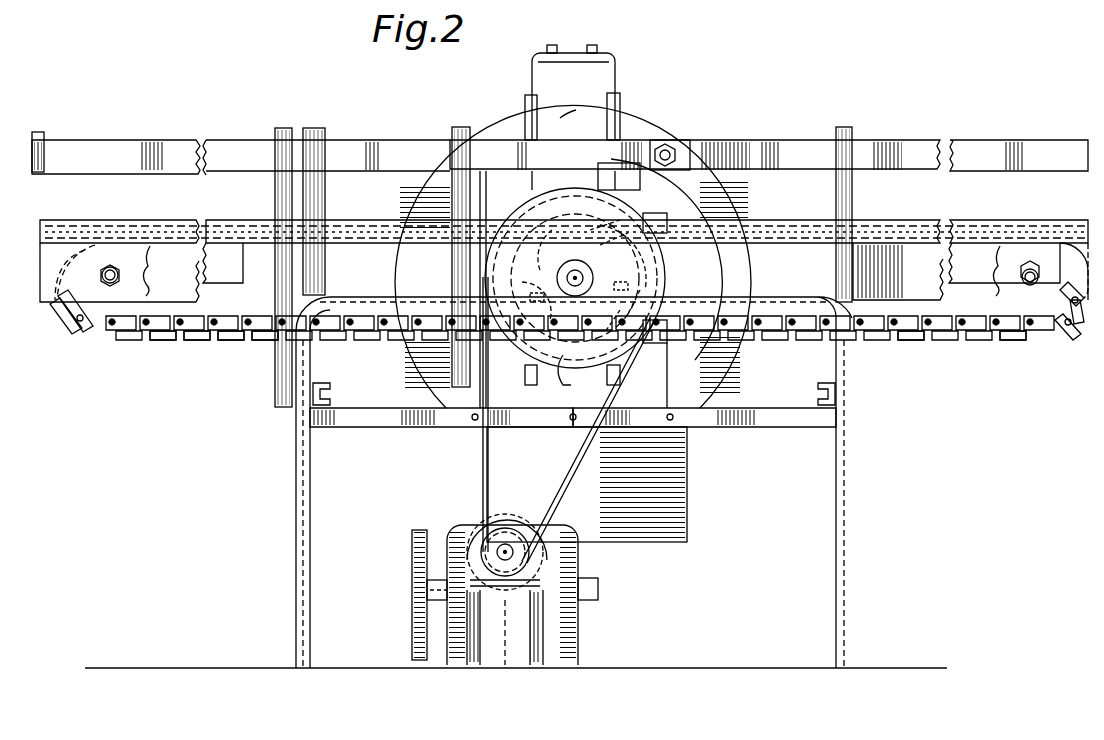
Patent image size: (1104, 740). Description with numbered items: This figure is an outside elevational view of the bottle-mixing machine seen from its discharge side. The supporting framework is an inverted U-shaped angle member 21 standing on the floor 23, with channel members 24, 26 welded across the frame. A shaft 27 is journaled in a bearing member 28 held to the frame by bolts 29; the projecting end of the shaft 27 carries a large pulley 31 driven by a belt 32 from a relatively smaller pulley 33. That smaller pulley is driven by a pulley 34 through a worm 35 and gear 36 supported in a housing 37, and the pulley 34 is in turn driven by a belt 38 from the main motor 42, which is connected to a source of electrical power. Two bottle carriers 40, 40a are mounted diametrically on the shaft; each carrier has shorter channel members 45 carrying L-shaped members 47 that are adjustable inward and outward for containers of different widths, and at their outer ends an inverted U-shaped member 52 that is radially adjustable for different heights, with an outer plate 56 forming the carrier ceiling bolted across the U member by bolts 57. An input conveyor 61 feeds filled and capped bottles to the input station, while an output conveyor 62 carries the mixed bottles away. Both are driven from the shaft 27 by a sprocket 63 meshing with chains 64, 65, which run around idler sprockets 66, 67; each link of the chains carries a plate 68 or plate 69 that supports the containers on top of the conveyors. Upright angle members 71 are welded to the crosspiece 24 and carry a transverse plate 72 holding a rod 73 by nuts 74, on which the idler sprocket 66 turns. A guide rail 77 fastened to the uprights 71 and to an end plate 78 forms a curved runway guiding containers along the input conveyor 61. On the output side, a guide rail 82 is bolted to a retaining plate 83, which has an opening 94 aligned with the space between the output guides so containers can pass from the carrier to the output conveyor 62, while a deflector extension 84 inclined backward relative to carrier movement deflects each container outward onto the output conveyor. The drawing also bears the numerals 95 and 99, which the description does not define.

The inverted U-shaped angle member 21 is at (772, 298).
The floor 23 is at (741, 659).
The channel member 24 is at (824, 389).
The channel member 26 is at (324, 389).
The shaft 27 is at (580, 262).
The bearing member 28 is at (523, 284).
The bolt 29 is at (527, 283).
The large pulley 31 is at (574, 375).
The belt 32 is at (575, 480).
The smaller pulley 33 is at (516, 532).
The pulley 34 is at (410, 546).
The worm 35 is at (505, 622).
The gear 36 is at (505, 514).
The housing 37 is at (476, 524).
The belt 38 is at (418, 530).
The bottle carrier 40 is at (619, 94).
The bottle carrier 40a is at (525, 386).
The main motor 42 is at (580, 628).
The shorter channel member 45 is at (668, 294).
The L-shaped member 47 is at (525, 97).
The inverted U-shaped member 52 is at (614, 70).
The outer plate 56 is at (550, 64).
The bolt 57 is at (590, 44).
The input conveyor 61 is at (951, 348).
The output conveyor 62 is at (213, 347).
The conveyor driving sprocket 63 is at (532, 243).
The chain 64 is at (1012, 342).
The chain 65 is at (243, 340).
The idler sprocket 66 is at (1060, 331).
The idler sprocket 67 is at (85, 329).
The plate 68 is at (904, 340).
The plate 69 is at (190, 342).
The angle member 71 is at (844, 127).
The transverse plate 72 is at (890, 242).
The rod 73 is at (1020, 275).
The nut 74 is at (1036, 273).
The guide rail 77 is at (748, 144).
The end plate 78 is at (658, 138).
The guide rail 82 is at (372, 142).
The retaining plate 83 is at (732, 200).
The deflector extension 84 is at (605, 174).
The opening 94 is at (578, 103).
The upper bearing block 95 is at (670, 224).
The drum inner ring 99 is at (662, 278).